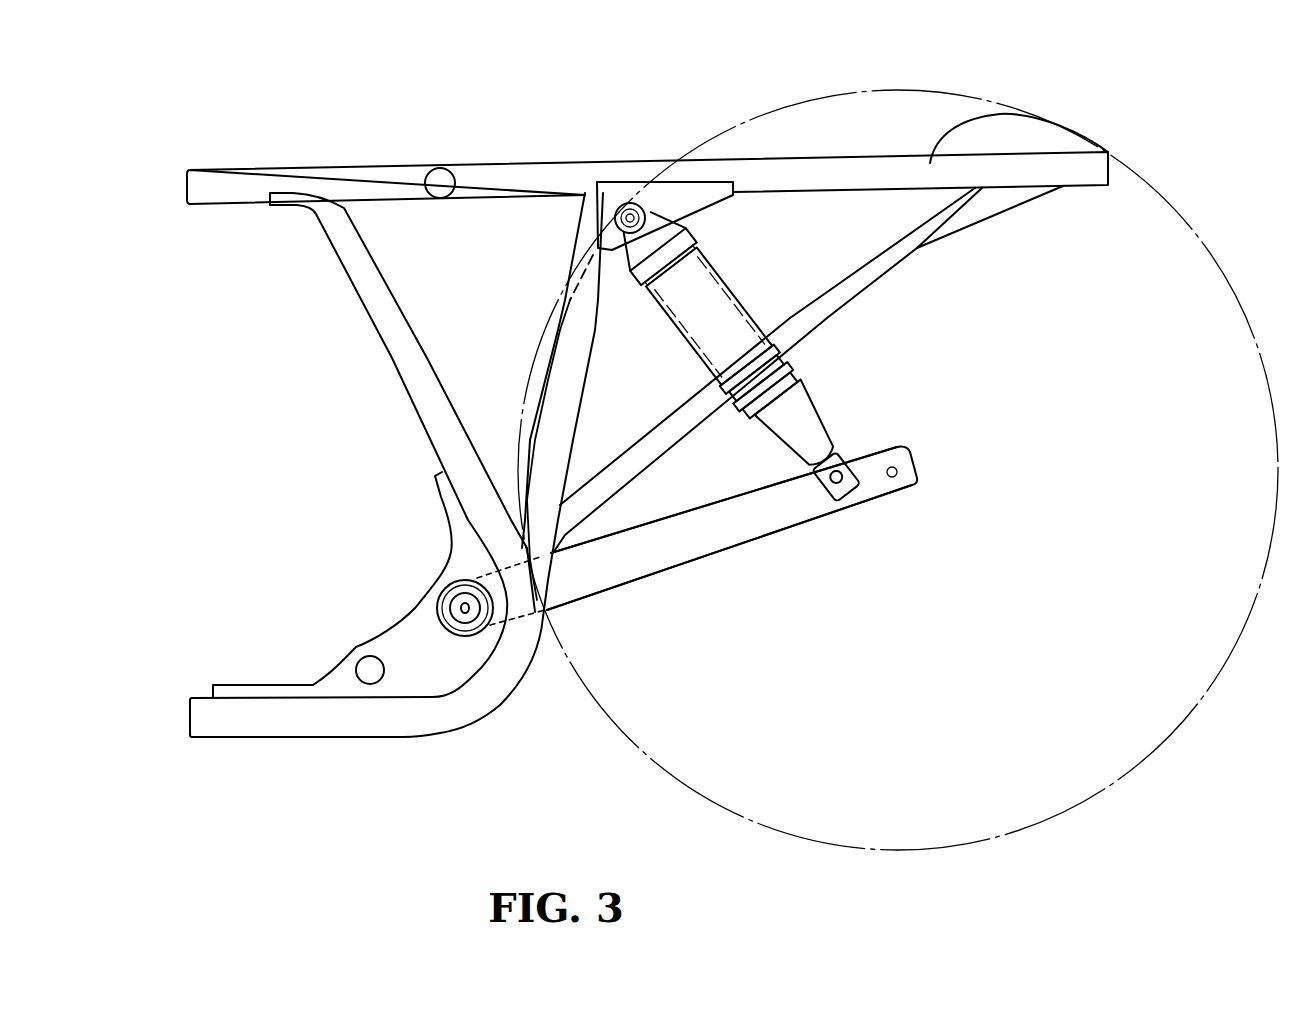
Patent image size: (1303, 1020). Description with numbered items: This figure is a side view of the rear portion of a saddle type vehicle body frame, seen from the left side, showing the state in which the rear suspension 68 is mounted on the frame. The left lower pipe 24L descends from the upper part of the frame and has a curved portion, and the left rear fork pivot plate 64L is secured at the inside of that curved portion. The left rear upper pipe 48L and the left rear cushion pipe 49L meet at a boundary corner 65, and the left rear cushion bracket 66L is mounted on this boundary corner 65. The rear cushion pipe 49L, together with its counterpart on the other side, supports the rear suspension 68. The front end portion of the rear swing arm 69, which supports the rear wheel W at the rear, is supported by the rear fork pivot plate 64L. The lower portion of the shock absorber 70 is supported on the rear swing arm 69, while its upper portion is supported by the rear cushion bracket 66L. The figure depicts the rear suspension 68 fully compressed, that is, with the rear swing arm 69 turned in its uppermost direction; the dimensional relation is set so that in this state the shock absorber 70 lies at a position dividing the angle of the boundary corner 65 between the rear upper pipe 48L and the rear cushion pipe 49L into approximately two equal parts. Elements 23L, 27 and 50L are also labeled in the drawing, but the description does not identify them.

The left main frame pipe 23L is at (243, 178).
The mounting hole 27 is at (440, 168).
The lower pipe 24L is at (388, 355).
The boundary corner 65 is at (607, 175).
The rear cushion pipe 49L is at (550, 423).
The rear cushion bracket 66L is at (678, 203).
The rear upper pipe 48L is at (1027, 112).
The left rear frame brace 50L is at (862, 292).
The shock absorber 70 is at (830, 408).
The rear fork pivot plate 64L is at (407, 648).
The rear suspension 68 is at (780, 562).
The rear swing arm 69 is at (804, 512).
The rear wheel W is at (1177, 720).